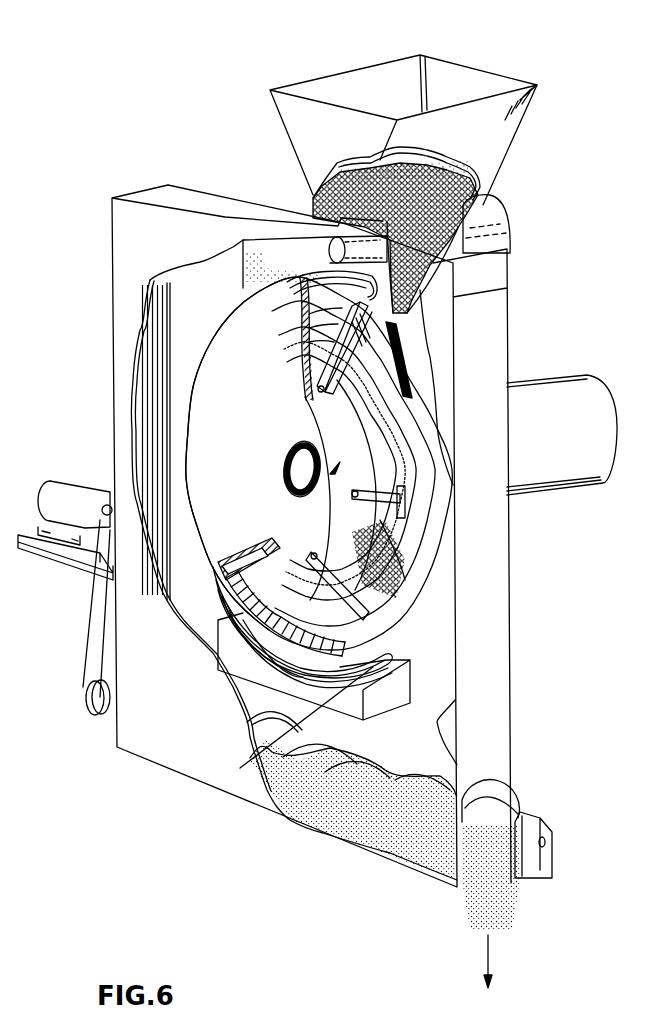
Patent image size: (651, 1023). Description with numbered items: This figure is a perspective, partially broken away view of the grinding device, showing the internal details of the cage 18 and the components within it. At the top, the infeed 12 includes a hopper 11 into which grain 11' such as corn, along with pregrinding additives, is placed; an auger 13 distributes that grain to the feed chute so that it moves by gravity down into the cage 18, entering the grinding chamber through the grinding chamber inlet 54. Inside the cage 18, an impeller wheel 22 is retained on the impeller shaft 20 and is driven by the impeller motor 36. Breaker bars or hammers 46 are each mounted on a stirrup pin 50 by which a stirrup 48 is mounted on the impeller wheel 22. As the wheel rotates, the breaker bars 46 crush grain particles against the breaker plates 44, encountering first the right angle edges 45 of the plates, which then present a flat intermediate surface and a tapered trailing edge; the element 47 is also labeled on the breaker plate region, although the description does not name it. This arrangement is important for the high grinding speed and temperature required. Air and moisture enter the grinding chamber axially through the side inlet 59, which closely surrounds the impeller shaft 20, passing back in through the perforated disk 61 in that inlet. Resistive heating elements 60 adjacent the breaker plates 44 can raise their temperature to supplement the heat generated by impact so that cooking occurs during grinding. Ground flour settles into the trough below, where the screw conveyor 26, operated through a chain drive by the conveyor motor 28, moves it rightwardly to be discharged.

The hopper 11 is at (403, 165).
The grain 11' is at (518, 110).
The infeed 12 is at (455, 294).
The auger 13 is at (510, 240).
The cage 18 is at (210, 368).
The impeller shaft 20 is at (317, 780).
The impeller wheel 22 is at (296, 548).
The screw conveyor 26 is at (298, 286).
The conveyor motor 28 is at (62, 482).
The impeller motor 36 is at (568, 390).
The breaker plates 44 is at (290, 617).
The right angle edges 45 is at (232, 588).
The breaker bars 46 is at (300, 318).
The riffles 47 is at (272, 606).
The stirrup 48 is at (304, 346).
The stirrup pin 50 is at (318, 392).
The grinding chamber inlet 54 is at (355, 552).
The side inlet 59 is at (286, 478).
The resistive heating elements 60 is at (300, 673).
The perforated disk 61 is at (298, 440).